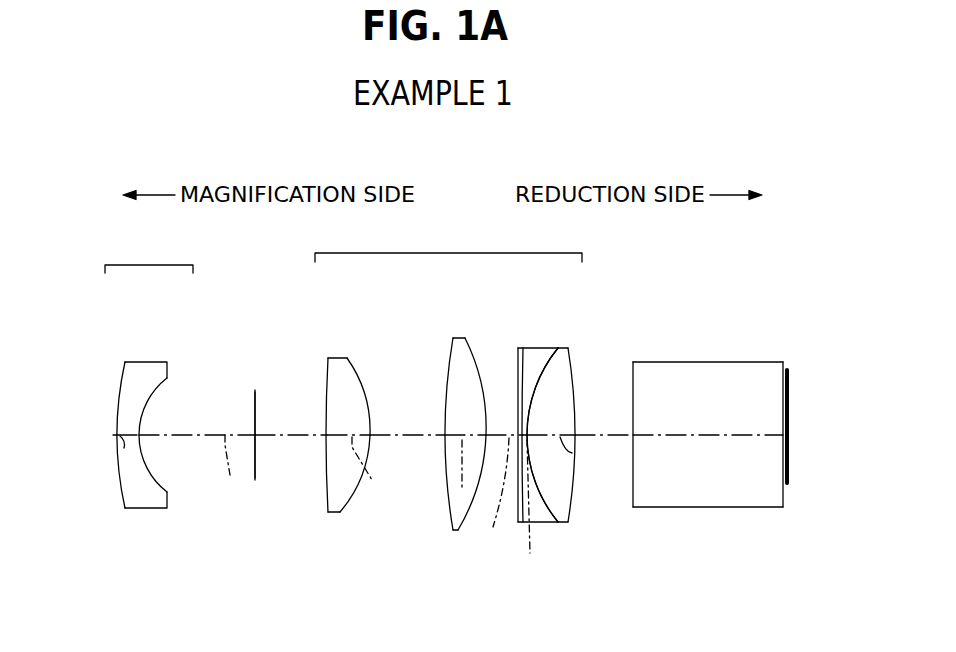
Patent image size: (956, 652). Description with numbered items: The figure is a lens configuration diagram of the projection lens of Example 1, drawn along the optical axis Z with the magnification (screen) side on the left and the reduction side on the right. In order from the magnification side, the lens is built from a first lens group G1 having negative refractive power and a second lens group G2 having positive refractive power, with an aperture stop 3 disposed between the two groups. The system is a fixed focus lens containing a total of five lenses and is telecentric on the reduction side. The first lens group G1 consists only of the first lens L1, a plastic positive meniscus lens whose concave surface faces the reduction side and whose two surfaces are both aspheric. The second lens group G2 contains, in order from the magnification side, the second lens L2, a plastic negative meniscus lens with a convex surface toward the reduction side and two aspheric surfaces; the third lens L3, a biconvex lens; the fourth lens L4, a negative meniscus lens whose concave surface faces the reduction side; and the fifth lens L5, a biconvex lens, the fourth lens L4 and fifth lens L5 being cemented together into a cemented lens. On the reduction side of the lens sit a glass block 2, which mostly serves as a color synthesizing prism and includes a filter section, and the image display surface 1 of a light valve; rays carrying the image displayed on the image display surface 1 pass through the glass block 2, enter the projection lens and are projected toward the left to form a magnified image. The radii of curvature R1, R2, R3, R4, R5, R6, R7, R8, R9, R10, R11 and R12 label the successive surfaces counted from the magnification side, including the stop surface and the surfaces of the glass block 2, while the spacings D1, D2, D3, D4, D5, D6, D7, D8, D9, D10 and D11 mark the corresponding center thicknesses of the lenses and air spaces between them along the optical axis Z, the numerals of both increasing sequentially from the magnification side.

The image display surface 1 is at (788, 485).
The glass block 2 is at (718, 453).
The aperture stop 3 is at (248, 448).
The optical axis Z is at (227, 473).
The first lens group G1 is at (149, 251).
The second lens group G2 is at (448, 240).
The first lens L1 is at (133, 458).
The second lens L2 is at (354, 461).
The third lens L3 is at (437, 449).
The fourth lens L4 is at (540, 439).
The fifth lens L5 is at (577, 449).
The radius of curvature of first surface R1 is at (117, 430).
The radius of curvature of second surface R2 is at (140, 433).
The radius of curvature of third surface R3 is at (272, 497).
The radius of curvature of fourth surface R4 is at (327, 430).
The radius of curvature of fifth surface R5 is at (369, 432).
The radius of curvature of sixth surface R6 is at (445, 392).
The radius of curvature of seventh surface R7 is at (469, 419).
The radius of curvature of eighth surface R8 is at (517, 423).
The radius of curvature of ninth surface R9 is at (540, 360).
The radius of curvature of tenth surface R10 is at (578, 417).
The radius of curvature of eleventh surface R11 is at (633, 430).
The radius of curvature of twelfth surface R12 is at (786, 370).
The first on-axis spacing D1 is at (109, 451).
The second on-axis spacing D2 is at (197, 457).
The third on-axis spacing D3 is at (291, 454).
The fourth on-axis spacing D4 is at (364, 474).
The fifth on-axis spacing D5 is at (407, 456).
The sixth on-axis spacing D6 is at (455, 490).
The seventh on-axis spacing D7 is at (495, 500).
The eighth on-axis spacing D8 is at (529, 515).
The ninth on-axis spacing D9 is at (574, 455).
The tenth on-axis spacing D10 is at (597, 457).
The eleventh on-axis spacing D11 is at (708, 457).